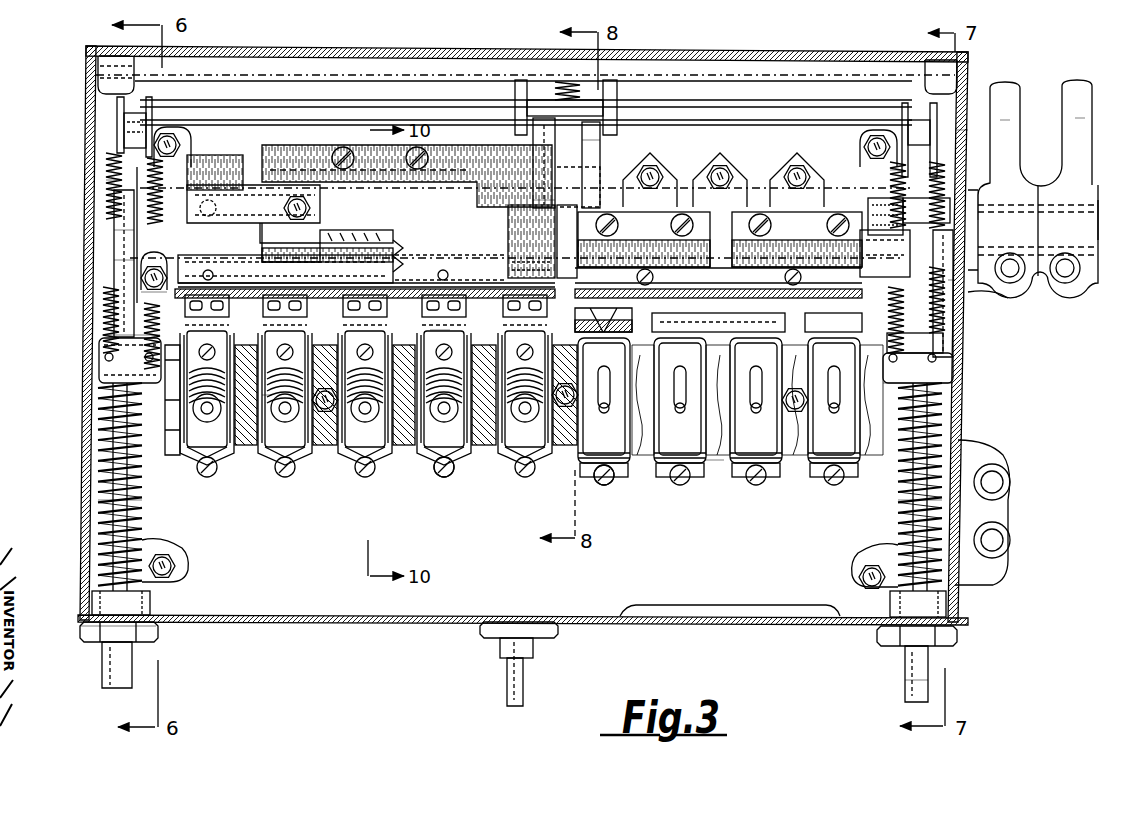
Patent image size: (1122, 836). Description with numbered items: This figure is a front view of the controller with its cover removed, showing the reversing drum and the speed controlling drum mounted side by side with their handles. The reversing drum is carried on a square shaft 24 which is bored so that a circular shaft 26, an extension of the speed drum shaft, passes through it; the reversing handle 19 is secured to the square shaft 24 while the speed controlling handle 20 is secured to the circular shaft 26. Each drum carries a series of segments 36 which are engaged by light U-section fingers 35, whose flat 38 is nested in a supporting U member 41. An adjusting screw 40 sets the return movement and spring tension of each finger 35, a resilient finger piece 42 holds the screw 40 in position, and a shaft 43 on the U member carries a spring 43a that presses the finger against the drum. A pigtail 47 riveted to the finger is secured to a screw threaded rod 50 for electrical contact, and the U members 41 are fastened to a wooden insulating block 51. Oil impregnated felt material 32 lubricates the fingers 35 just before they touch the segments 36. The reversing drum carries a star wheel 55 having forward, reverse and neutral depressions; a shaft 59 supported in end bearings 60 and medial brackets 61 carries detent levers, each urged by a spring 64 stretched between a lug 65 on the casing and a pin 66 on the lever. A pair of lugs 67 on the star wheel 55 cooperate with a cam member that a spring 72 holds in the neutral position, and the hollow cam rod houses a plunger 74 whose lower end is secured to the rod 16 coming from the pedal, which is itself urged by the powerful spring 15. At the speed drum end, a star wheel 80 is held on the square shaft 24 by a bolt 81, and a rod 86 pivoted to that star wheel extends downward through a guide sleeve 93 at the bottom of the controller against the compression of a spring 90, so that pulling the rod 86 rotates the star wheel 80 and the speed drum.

The spring 15 is at (598, 140).
The rod 16 is at (550, 205).
The reversing handle 19 is at (1012, 122).
The speed controlling handle 20 is at (1082, 118).
The square shaft 24 is at (975, 195).
The circular shaft 26 is at (1100, 215).
The oil impregnated felt material 32 is at (160, 345).
The finger 35 is at (120, 318).
The segment 36 is at (712, 325).
The flat of the U 38 is at (450, 328).
The adjusting screw 40 is at (268, 362).
The supporting U member 41 is at (474, 425).
The resilient finger piece 42 is at (248, 395).
The shaft 43 is at (364, 418).
The spring 43a is at (312, 403).
The pigtail 47 is at (388, 448).
The screw threaded rod 50 is at (444, 480).
The wooden insulating block 51 is at (720, 450).
The star wheel 55 is at (868, 178).
The shaft 59 is at (722, 118).
The end bearing 60 is at (100, 88).
The bracket 61 is at (516, 92).
The spring 64 is at (945, 312).
The lug 65 is at (950, 375).
The pin 66 is at (960, 135).
The lug 67 is at (917, 175).
The spring 72 is at (900, 512).
The plunger 74 is at (915, 682).
The star wheel 80 is at (110, 170).
The bolt 81 is at (100, 268).
The rod 86 is at (125, 232).
The spring 90 is at (142, 512).
The guide sleeve 93 is at (156, 632).